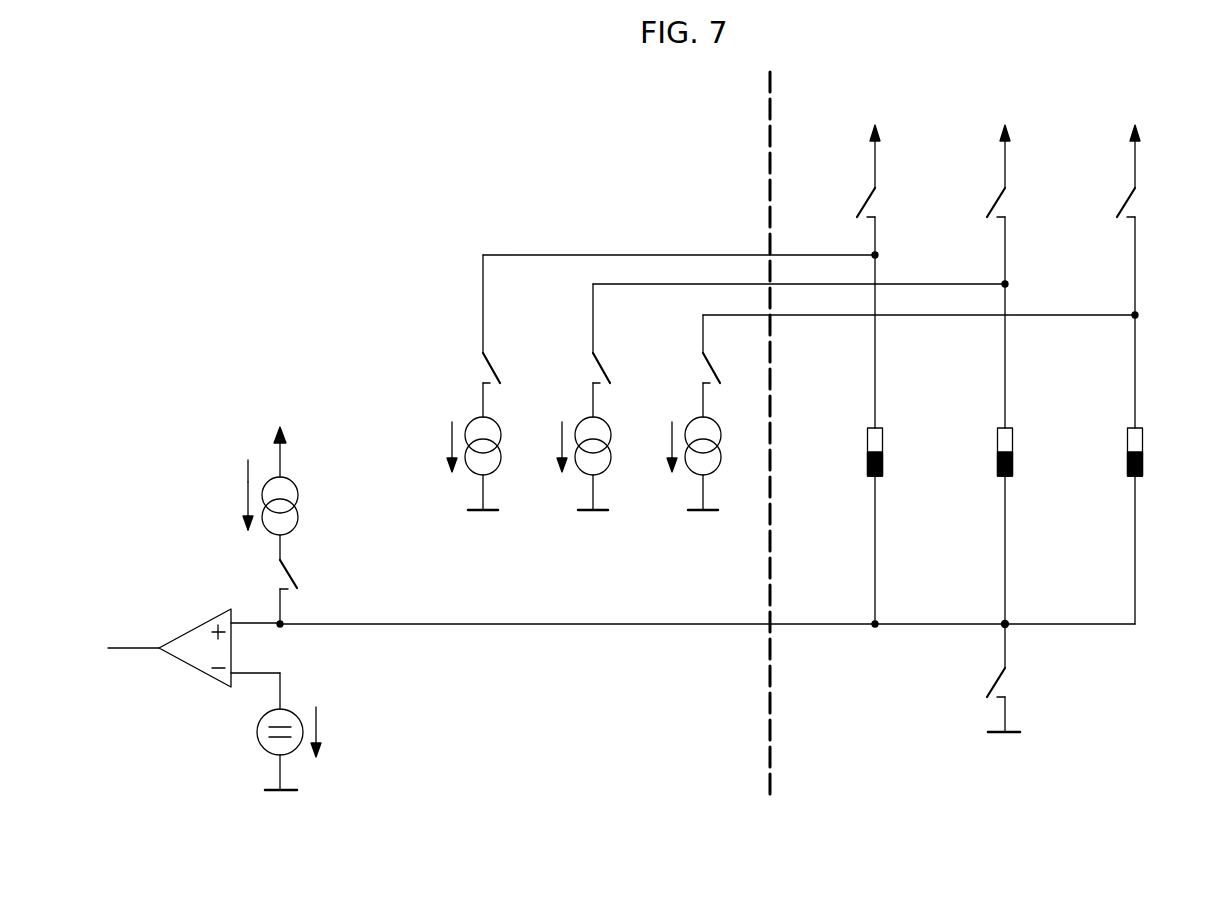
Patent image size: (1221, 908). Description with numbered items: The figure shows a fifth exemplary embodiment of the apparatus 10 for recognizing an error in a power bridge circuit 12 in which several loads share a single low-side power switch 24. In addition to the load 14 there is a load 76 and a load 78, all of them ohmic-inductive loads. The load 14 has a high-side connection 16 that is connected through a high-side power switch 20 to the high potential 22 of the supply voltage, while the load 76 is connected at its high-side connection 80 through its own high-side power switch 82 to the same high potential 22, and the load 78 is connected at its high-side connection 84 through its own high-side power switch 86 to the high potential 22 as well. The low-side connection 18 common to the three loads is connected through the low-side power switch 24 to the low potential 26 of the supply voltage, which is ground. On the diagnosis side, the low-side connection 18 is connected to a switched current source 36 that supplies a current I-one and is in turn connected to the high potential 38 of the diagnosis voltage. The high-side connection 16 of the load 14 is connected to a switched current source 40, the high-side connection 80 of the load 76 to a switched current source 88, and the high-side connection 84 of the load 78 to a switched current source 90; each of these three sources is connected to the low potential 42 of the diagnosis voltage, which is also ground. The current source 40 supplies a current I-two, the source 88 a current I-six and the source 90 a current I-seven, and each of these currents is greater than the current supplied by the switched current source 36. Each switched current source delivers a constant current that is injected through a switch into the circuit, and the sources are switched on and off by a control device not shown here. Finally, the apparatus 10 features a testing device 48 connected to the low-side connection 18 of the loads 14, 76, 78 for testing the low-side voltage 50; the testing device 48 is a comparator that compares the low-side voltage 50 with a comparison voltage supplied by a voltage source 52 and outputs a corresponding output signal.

The apparatus 10 is at (312, 198).
The power bridge circuit 12 is at (1112, 719).
The load 14 is at (866, 445).
The high-side connection 16 is at (880, 255).
The low-side connection 18 is at (1010, 620).
The high-side power switch 20 is at (863, 200).
The high potential of the supply voltage 22 is at (870, 128).
The low-side power switch 24 is at (990, 683).
The low potential of the supply voltage 26 is at (993, 737).
The switched current source 36 is at (238, 545).
The high potential of the diagnosis voltage 38 is at (275, 430).
The switched current source 40 is at (440, 386).
The low potential of the diagnosis voltage 42 is at (297, 795).
The testing device 48 is at (190, 668).
The low-side voltage 50 is at (982, 609).
The voltage source 52 is at (256, 733).
The load 76 is at (996, 445).
The load 78 is at (1126, 445).
The high-side connection 80 is at (1010, 284).
The high-side power switch 82 is at (993, 200).
The high-side connection 84 is at (1140, 315).
The high-side power switch 86 is at (1123, 200).
The switched current source 88 is at (560, 497).
The switched current source 90 is at (670, 497).